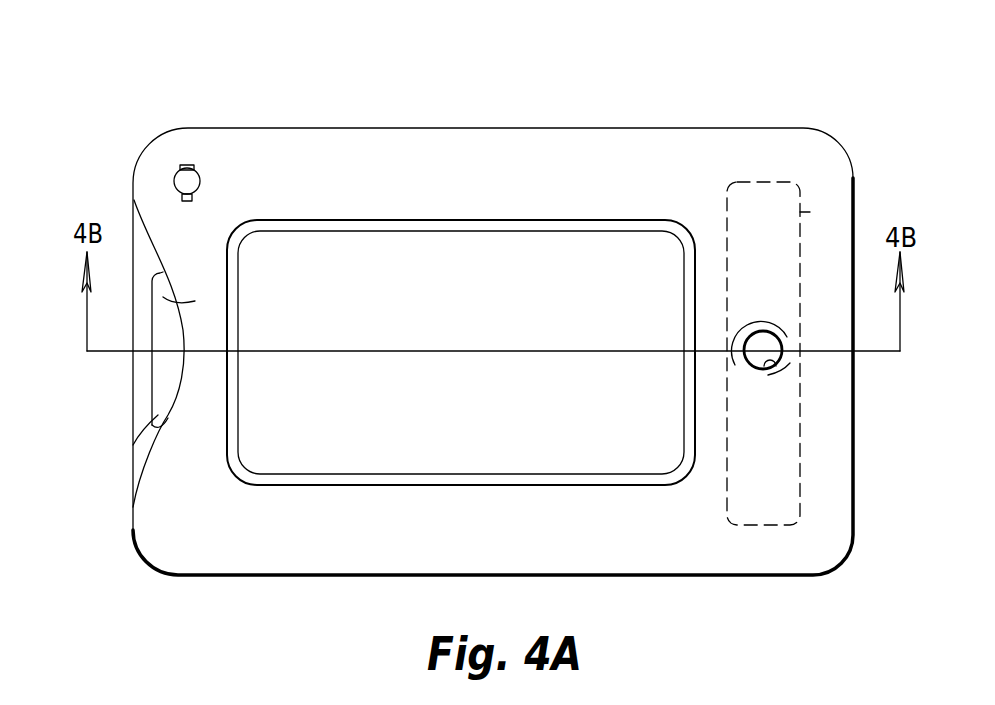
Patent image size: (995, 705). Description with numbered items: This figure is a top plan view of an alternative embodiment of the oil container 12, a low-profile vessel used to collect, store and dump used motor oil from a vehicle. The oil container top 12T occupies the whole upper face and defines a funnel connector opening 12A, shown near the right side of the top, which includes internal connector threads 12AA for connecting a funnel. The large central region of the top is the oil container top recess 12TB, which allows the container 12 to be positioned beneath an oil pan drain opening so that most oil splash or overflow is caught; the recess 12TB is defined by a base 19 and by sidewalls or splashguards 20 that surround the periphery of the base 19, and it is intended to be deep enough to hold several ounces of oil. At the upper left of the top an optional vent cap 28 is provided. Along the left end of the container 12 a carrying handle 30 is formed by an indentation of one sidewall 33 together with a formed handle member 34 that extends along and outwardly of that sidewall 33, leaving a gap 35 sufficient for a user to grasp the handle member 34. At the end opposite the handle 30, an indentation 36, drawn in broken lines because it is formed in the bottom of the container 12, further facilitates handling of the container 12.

The oil container 12 is at (508, 102).
The oil container top recess 12TB is at (382, 257).
The oil container top 12T is at (615, 165).
The sidewalls or splashguards 20 is at (363, 480).
The indentation 36 is at (815, 210).
The vent cap 28 is at (174, 170).
The handle member 34 is at (140, 312).
The base 19 is at (274, 382).
The gap 35 is at (195, 301).
The sidewall 33 is at (140, 432).
The carrying handle 30 is at (133, 362).
The funnel connector opening 12A is at (791, 342).
The internal connector threads 12AA is at (765, 367).